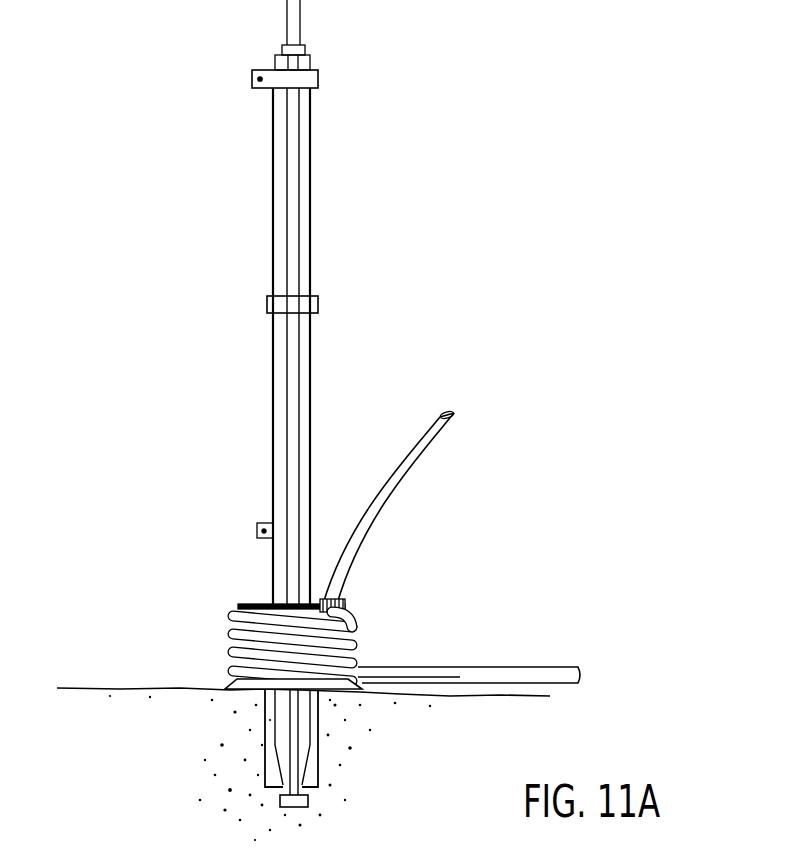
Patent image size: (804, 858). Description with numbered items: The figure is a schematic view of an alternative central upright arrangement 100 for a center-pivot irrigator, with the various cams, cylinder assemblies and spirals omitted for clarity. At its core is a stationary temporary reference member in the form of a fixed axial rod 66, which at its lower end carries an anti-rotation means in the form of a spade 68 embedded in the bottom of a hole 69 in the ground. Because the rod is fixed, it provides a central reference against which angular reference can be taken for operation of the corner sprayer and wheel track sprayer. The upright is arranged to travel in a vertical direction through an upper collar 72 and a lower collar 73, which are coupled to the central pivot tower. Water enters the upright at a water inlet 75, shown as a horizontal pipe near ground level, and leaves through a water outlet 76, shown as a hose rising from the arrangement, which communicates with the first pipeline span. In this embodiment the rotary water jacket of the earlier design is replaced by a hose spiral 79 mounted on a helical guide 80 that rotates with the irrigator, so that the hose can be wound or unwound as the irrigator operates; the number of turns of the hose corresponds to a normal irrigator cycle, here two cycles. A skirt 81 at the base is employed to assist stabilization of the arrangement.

The central upright arrangement 100 is at (452, 154).
The collar 72 is at (305, 80).
The collar 73 is at (305, 308).
The fixed axial rod 66 is at (293, 480).
The water outlet 76 is at (448, 415).
The helical guide 80 is at (247, 608).
The hose spiral 79 is at (150, 600).
The skirt 81 is at (227, 687).
The water inlet 75 is at (460, 680).
The hole 69 is at (326, 736).
The spade 68 is at (308, 798).